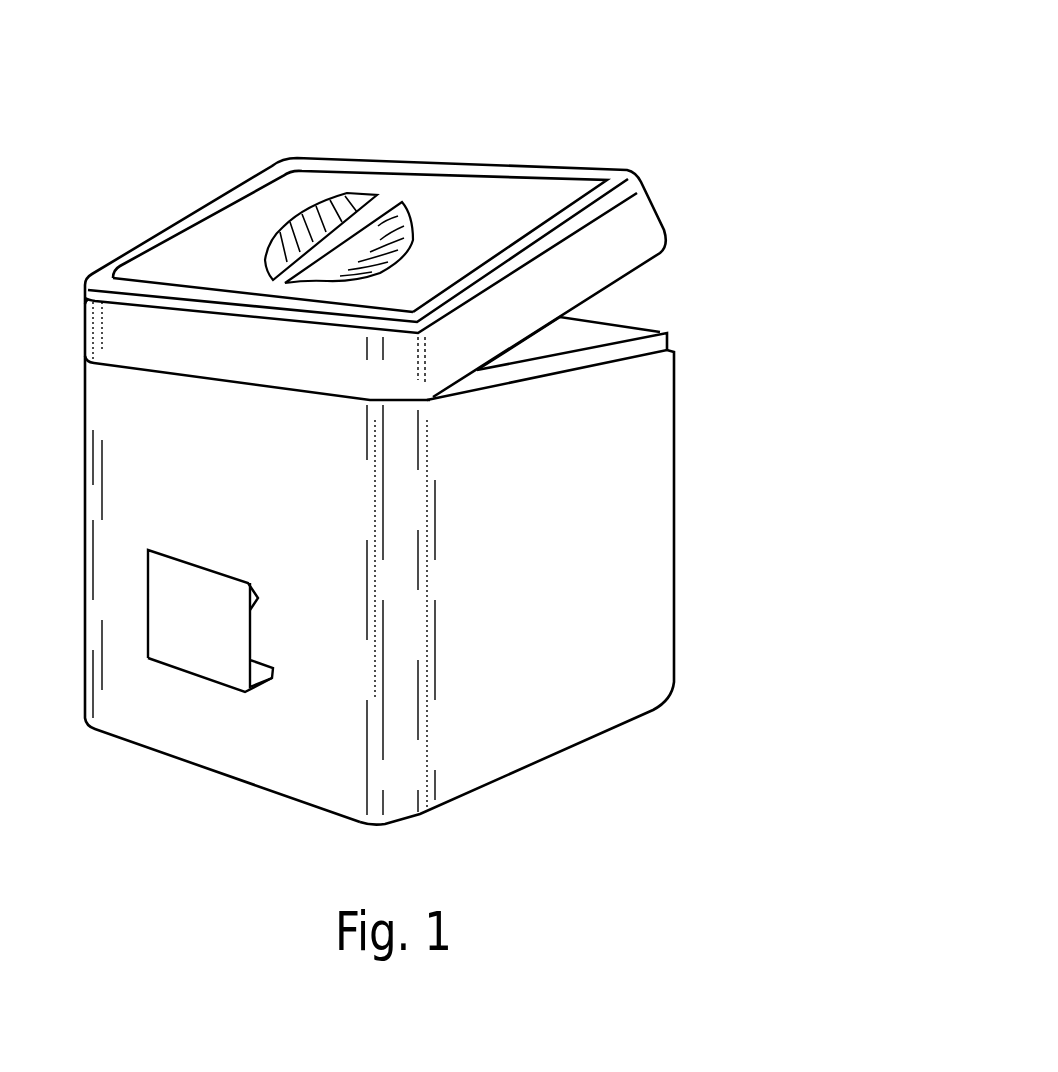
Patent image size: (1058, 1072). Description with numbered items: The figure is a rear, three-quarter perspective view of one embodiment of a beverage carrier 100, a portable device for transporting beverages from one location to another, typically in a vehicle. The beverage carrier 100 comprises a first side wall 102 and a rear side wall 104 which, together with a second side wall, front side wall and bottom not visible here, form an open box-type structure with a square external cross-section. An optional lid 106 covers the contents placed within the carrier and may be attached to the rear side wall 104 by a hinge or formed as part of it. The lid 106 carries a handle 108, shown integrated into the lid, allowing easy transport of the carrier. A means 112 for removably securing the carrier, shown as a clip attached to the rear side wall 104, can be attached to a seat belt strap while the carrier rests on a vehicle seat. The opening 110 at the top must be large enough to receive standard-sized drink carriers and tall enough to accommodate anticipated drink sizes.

The beverage carrier 100 is at (484, 413).
The first side wall 102 is at (600, 563).
The rear side wall 104 is at (268, 499).
The lid 106 is at (375, 221).
The handle 108 is at (373, 207).
The opening 110 is at (550, 343).
The means for removably securing 112 is at (198, 657).